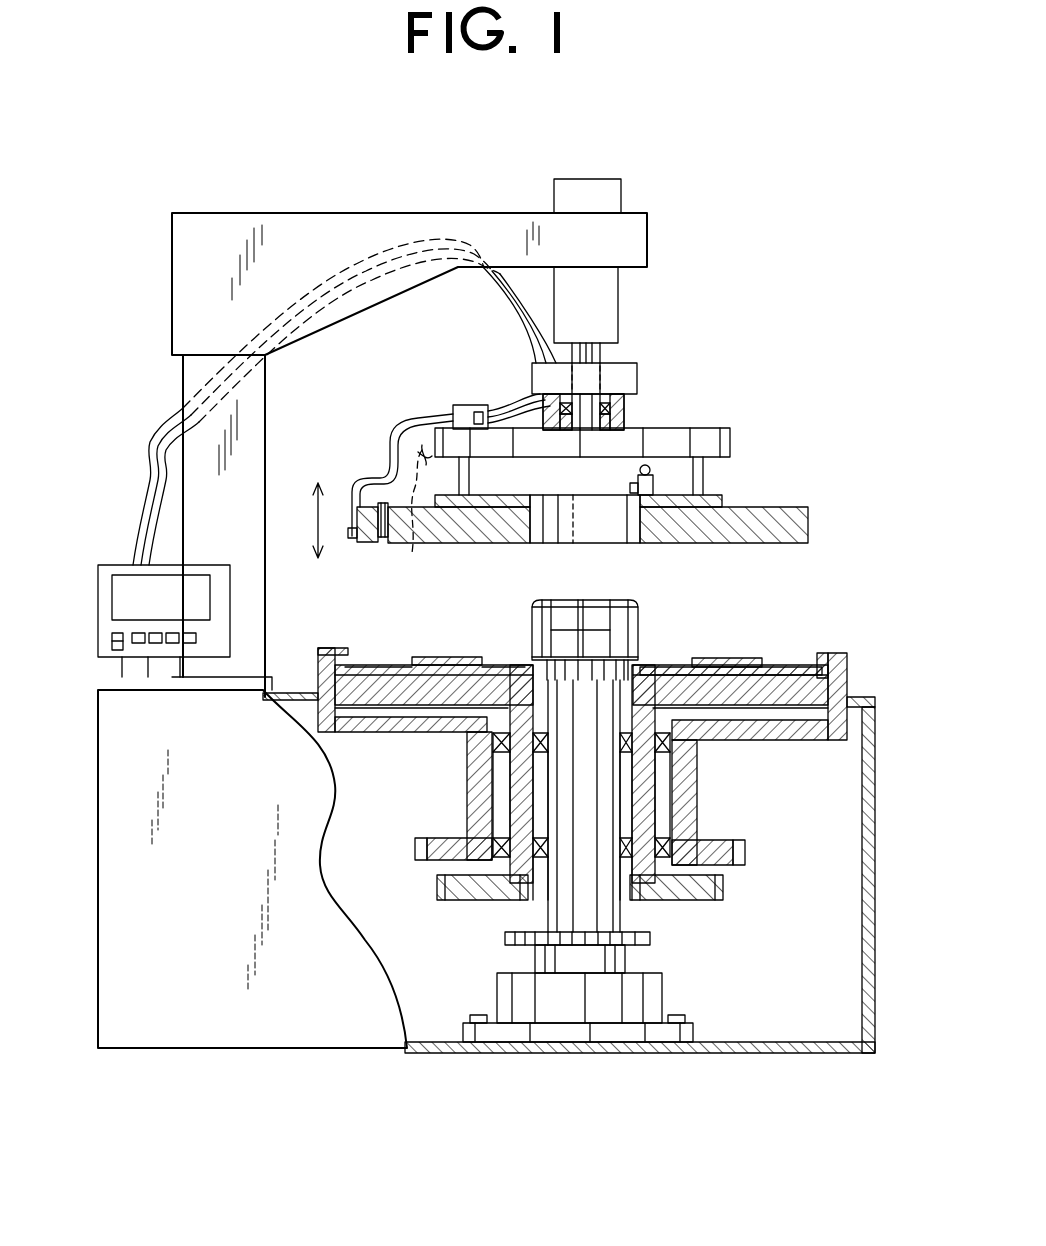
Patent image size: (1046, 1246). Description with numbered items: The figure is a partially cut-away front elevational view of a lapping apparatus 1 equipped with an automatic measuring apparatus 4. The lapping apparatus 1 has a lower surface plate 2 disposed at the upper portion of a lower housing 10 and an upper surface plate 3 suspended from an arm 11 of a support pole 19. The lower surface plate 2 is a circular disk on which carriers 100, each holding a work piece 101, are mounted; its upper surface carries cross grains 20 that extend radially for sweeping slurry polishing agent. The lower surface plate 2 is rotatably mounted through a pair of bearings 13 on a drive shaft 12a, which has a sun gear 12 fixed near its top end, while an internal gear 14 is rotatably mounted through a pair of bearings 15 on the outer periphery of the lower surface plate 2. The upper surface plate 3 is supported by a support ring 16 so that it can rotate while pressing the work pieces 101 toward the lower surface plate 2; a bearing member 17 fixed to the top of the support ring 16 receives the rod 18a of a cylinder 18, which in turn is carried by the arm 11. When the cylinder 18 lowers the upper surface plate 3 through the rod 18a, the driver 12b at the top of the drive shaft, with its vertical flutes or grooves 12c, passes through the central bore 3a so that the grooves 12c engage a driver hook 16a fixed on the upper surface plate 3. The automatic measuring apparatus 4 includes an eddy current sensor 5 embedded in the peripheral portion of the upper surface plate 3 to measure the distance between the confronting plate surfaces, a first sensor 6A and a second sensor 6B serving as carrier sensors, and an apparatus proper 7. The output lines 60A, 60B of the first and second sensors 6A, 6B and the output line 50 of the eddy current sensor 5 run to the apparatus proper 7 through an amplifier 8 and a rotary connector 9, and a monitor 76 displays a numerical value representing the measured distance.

The lapping apparatus 1 is at (462, 1058).
The lower surface plate 2 is at (785, 690).
The upper surface plate 3 is at (762, 507).
The central bore 3a is at (540, 522).
The automatic measuring apparatus 4 is at (129, 506).
The eddy current sensor 5 is at (365, 540).
The first sensor 6A is at (410, 555).
The second sensor 6B is at (345, 510).
The apparatus proper 7 is at (195, 565).
The amplifier 8 is at (470, 405).
The rotary connector 9 is at (535, 364).
The lower housing 10 is at (212, 1000).
The arm 11 is at (410, 212).
The sun gear 12 is at (605, 658).
The drive shaft 12a is at (625, 917).
The driver 12b is at (532, 600).
The vertical flutes or grooves 12c is at (585, 632).
The bearings 13 is at (655, 790).
The internal gear 14 is at (848, 678).
The bearings 15 is at (697, 740).
The support ring 16 is at (730, 436).
The driver hook 16a is at (630, 485).
The bearing member 17 is at (630, 410).
The cylinder 18 is at (620, 313).
The rod 18a is at (600, 361).
The support pole 19 is at (270, 410).
The cross grains 20 is at (390, 675).
The output wire or line 50 is at (408, 428).
The output wire or line 60A is at (420, 418).
The output wire or line 60B is at (375, 470).
The monitor 76 is at (130, 592).
The carriers 100 is at (770, 667).
The work piece 101 is at (728, 658).